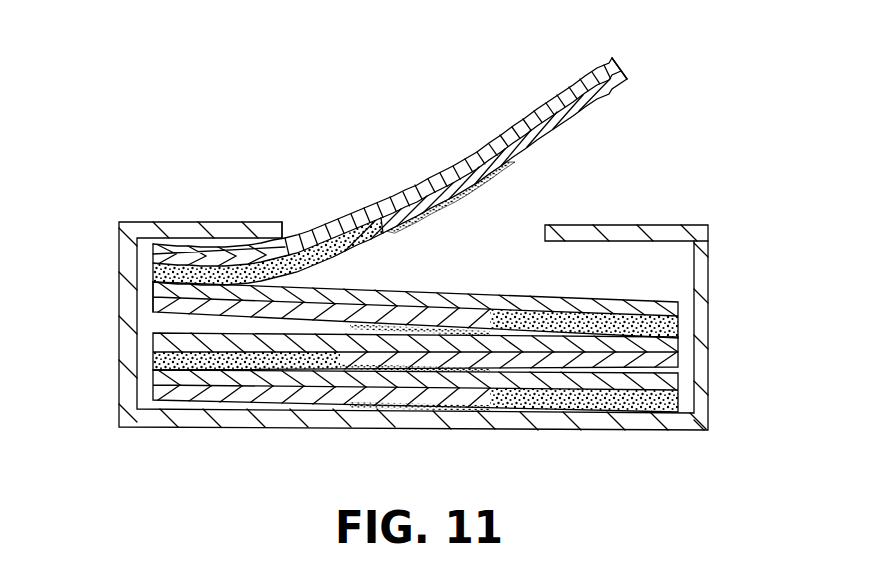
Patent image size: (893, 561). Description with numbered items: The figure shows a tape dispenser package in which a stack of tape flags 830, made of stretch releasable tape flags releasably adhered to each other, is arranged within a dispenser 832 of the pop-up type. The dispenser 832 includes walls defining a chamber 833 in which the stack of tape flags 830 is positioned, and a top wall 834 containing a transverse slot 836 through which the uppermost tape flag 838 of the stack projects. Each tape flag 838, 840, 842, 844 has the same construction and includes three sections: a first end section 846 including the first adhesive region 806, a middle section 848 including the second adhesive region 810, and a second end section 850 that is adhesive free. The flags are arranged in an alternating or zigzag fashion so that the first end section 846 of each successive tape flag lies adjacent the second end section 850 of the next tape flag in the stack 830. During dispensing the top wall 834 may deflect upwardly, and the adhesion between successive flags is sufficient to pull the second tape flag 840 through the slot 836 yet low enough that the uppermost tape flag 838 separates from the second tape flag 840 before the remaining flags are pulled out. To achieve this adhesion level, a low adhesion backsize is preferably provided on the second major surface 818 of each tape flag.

The first adhesive region 806 is at (153, 268).
The second adhesive region 810 is at (490, 187).
The second major surface 818 is at (503, 132).
The stack of tape flags 830 is at (623, 300).
The dispenser 832 is at (708, 317).
The chamber 833 is at (677, 272).
The top wall 834 is at (612, 225).
The transverse slot 836 is at (473, 240).
The uppermost tape flag 838 is at (620, 62).
The second tape flag 840 is at (153, 300).
The tape flag 842 is at (153, 358).
The tape flag 844 is at (153, 390).
The first end section 846 is at (225, 258).
The middle section 848 is at (398, 196).
The second end section 850 is at (567, 93).